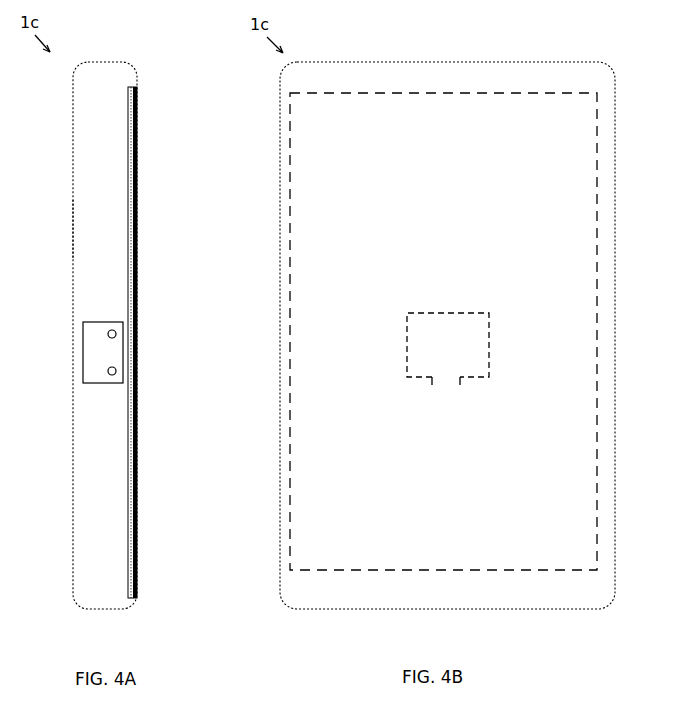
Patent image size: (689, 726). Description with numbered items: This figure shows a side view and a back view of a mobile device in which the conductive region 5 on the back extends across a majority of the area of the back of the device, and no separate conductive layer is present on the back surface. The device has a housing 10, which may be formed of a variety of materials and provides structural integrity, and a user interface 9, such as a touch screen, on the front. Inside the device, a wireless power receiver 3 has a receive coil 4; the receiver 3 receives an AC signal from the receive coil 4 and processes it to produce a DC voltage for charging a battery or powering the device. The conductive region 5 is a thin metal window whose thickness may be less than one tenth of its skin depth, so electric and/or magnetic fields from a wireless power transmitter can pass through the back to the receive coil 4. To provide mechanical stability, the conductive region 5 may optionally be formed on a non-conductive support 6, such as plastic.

In FIG. 4A, the wireless power receiver 3 is at (85, 322).
In FIG. 4B, the receive coil 4 is at (433, 313).
In FIG. 4A, the conductive region 5 is at (138, 225).
In FIG. 4B, the conductive region 5 is at (454, 137).
In FIG. 4A, the non-conductive support 6 is at (131, 141).
In FIG. 4A, the user interface 9 is at (69, 243).
In FIG. 4A, the housing 10 is at (73, 133).